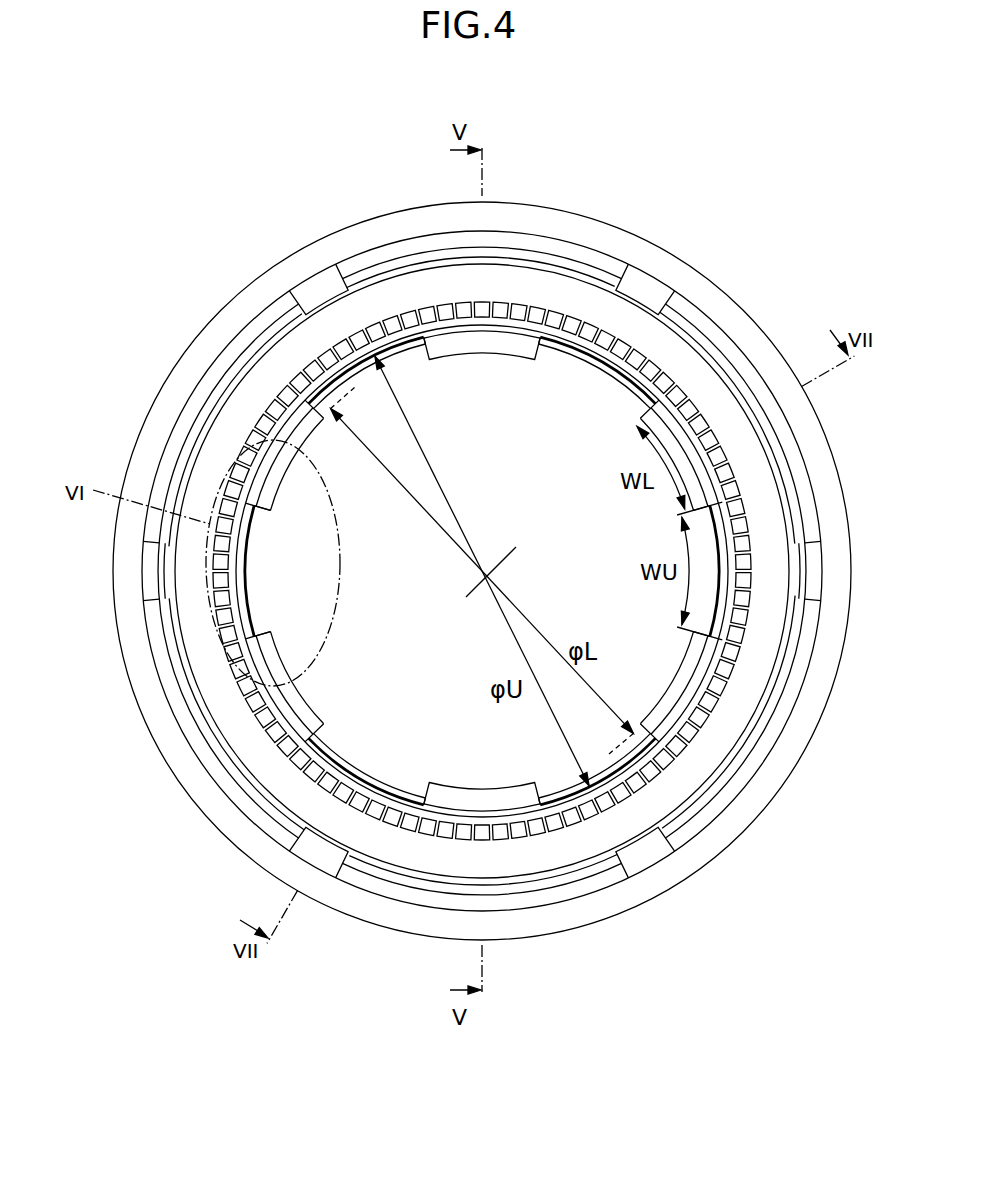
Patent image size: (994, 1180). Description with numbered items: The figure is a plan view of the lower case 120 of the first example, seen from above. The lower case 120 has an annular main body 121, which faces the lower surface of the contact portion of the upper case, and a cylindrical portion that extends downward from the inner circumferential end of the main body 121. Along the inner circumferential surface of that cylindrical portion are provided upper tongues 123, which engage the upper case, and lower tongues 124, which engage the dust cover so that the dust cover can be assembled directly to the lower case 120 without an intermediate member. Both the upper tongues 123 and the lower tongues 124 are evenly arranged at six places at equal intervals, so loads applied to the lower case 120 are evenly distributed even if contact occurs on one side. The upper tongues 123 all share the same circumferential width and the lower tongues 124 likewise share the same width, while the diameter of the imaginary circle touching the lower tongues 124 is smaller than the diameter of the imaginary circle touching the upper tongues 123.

The lower case 120 is at (668, 174).
The main body 121 is at (811, 739).
The upper tongues 123 is at (601, 360).
The lower tongues 124 is at (480, 346).